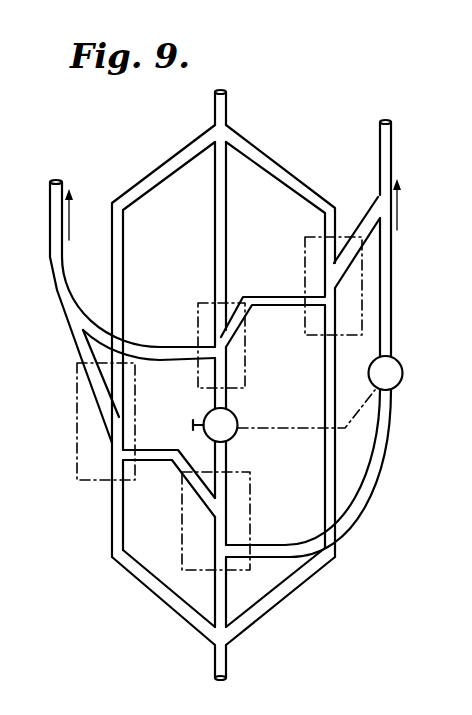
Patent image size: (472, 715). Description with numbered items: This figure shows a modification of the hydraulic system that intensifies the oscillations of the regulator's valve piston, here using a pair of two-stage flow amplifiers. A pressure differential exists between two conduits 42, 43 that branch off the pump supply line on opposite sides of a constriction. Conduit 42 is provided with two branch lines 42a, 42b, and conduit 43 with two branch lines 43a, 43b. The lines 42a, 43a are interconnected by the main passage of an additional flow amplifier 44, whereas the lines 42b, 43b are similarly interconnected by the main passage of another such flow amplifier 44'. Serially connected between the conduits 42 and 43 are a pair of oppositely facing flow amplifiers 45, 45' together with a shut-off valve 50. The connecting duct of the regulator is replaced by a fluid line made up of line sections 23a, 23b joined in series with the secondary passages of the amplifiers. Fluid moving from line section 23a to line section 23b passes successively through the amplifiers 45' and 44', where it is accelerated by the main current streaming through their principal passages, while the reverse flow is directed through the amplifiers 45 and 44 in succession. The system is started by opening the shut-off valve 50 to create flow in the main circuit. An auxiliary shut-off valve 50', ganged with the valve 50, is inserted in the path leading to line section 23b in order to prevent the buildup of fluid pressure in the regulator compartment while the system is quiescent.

The conduit 43 is at (232, 157).
The branch line 43a is at (181, 160).
The branch line 43b is at (275, 167).
The line section 23a is at (52, 257).
The line section 23b is at (382, 150).
The flow amplifier 44 is at (82, 385).
The flow amplifier 44' is at (363, 286).
The flow amplifier 45 is at (186, 510).
The flow amplifier 45' is at (242, 349).
The shut-off valve 50 is at (284, 416).
The auxiliary shut-off valve 50' is at (399, 357).
The conduit 42 is at (218, 610).
The branch line 42a is at (143, 583).
The branch line 42b is at (290, 586).